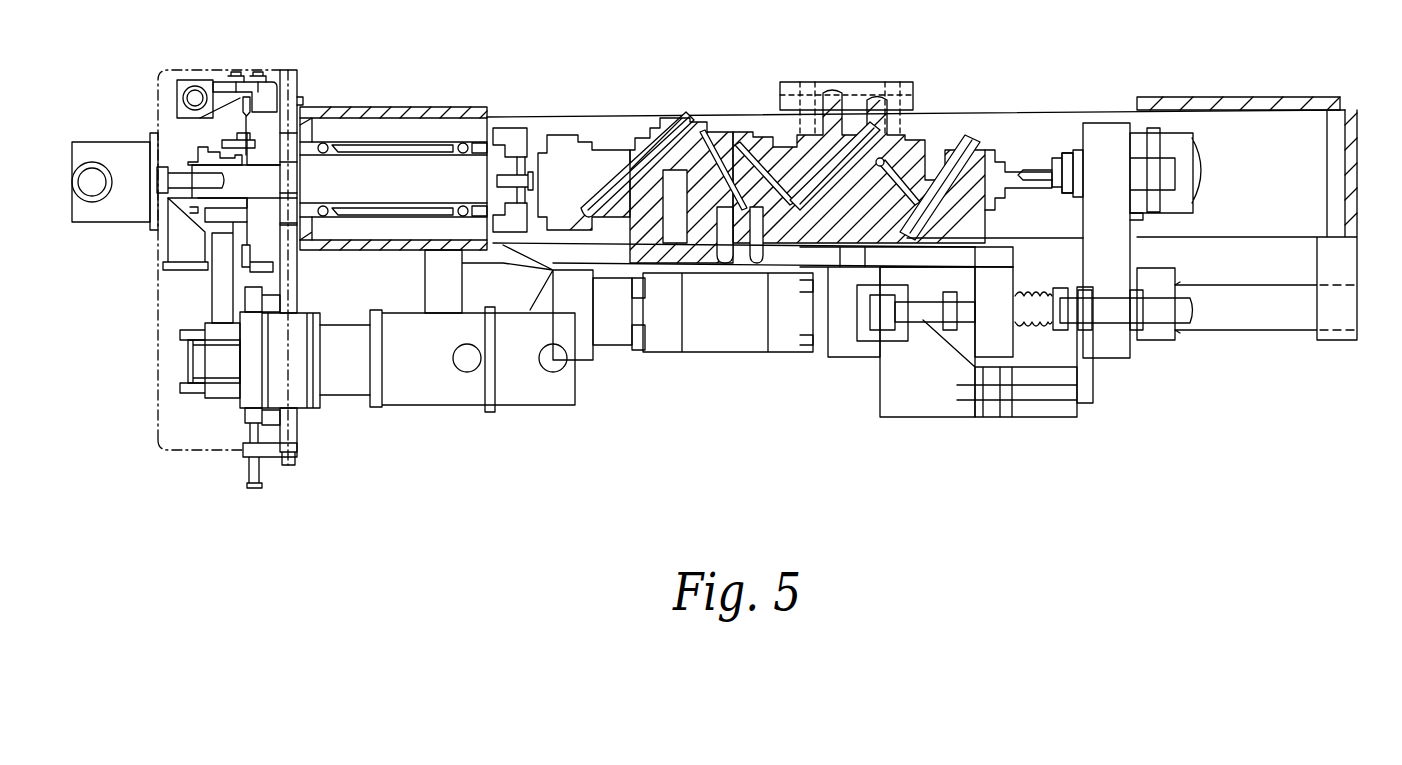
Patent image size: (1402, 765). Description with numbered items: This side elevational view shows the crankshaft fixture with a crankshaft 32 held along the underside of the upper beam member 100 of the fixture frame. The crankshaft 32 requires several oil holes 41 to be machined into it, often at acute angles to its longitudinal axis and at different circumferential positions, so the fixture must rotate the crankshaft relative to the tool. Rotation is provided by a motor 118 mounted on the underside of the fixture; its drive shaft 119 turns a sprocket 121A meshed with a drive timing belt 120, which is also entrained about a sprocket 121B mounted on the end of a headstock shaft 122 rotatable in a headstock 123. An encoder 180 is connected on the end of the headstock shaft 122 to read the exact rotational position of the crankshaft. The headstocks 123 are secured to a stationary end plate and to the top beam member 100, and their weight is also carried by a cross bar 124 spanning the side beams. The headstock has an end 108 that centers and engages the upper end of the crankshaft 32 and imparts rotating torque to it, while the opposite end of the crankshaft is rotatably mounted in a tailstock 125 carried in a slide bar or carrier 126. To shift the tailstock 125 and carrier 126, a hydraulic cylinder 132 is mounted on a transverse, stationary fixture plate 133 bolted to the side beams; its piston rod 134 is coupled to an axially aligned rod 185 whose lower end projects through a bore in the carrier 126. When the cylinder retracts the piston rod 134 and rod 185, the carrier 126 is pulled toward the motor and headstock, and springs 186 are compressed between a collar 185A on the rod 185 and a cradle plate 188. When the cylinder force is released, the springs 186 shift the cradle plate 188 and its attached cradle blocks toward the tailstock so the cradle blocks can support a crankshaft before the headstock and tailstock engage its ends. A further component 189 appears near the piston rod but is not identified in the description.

The upper beam member 100 is at (1368, 128).
The encoders 180 is at (118, 140).
The sprocket 121B is at (198, 147).
The sprocket 121A is at (215, 328).
The drive timing belt 120 is at (220, 276).
The drive shaft 119 is at (215, 355).
The headstocks 123 is at (353, 107).
The headstock shafts 122 is at (405, 185).
The headstock ends 108 is at (510, 152).
The oil holes 41 is at (640, 128).
The crankshaft 32 is at (1003, 148).
The tailstock 125 is at (1062, 192).
The slide bar or carrier 126 is at (1120, 228).
The rod 185 is at (1103, 310).
The springs 186 is at (1038, 293).
The collar 185A is at (1063, 330).
The cross bar 124 is at (440, 266).
The motor 118 is at (415, 385).
The hydraulic cylinder 132 is at (728, 338).
The fixture plate 133 is at (852, 347).
The bearing block 189 is at (900, 320).
The piston rod 134 is at (918, 322).
The cradle plate 188 is at (998, 357).